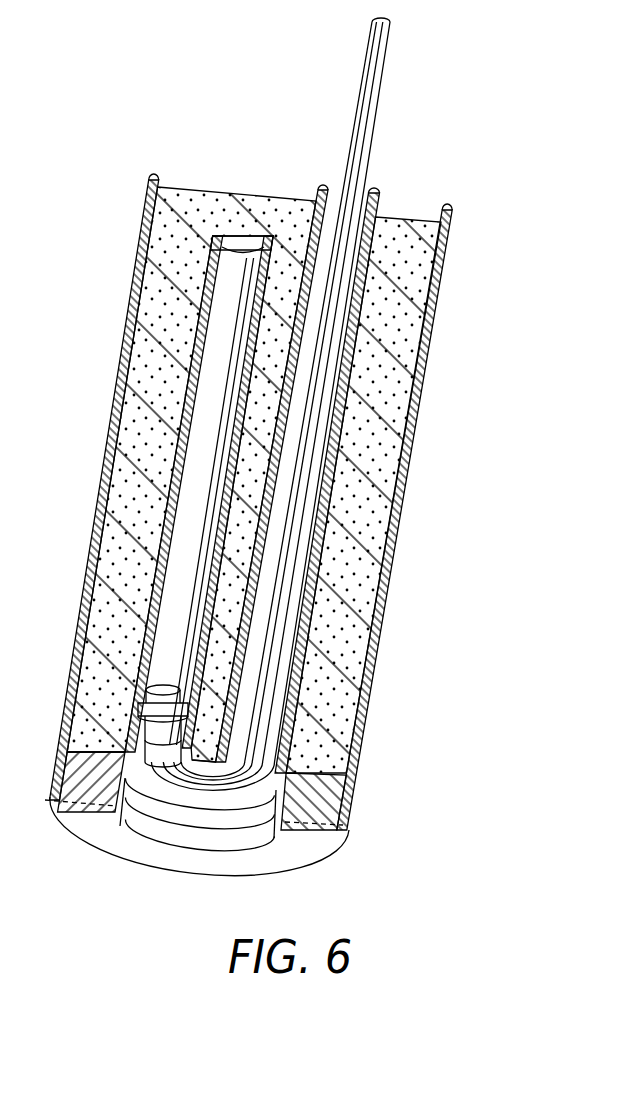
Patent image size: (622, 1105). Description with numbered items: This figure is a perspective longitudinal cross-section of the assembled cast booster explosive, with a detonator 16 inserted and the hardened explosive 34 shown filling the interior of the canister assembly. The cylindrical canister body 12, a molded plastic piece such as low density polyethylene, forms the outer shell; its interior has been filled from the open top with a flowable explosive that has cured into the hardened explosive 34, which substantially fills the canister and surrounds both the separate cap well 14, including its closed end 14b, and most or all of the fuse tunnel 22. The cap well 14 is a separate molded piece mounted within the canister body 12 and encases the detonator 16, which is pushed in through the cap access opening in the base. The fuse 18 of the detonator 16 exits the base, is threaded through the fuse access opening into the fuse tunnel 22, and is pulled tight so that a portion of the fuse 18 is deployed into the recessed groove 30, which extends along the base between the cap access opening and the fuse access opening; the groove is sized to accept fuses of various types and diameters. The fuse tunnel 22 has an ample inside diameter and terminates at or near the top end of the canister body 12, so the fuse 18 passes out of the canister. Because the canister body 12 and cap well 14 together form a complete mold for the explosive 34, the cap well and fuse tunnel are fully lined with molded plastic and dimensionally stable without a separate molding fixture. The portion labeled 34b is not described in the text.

The cylindrical canister body 12 is at (407, 481).
The cap well 14 is at (177, 474).
The closed end of cap well 14b is at (250, 247).
The detonator 16 is at (185, 543).
The fuse 18 is at (364, 151).
The fuse tunnel 22 is at (320, 524).
The recessed groove 30 is at (205, 772).
The hardened explosive 34 is at (397, 333).
The lower insulation portion 34b is at (113, 718).